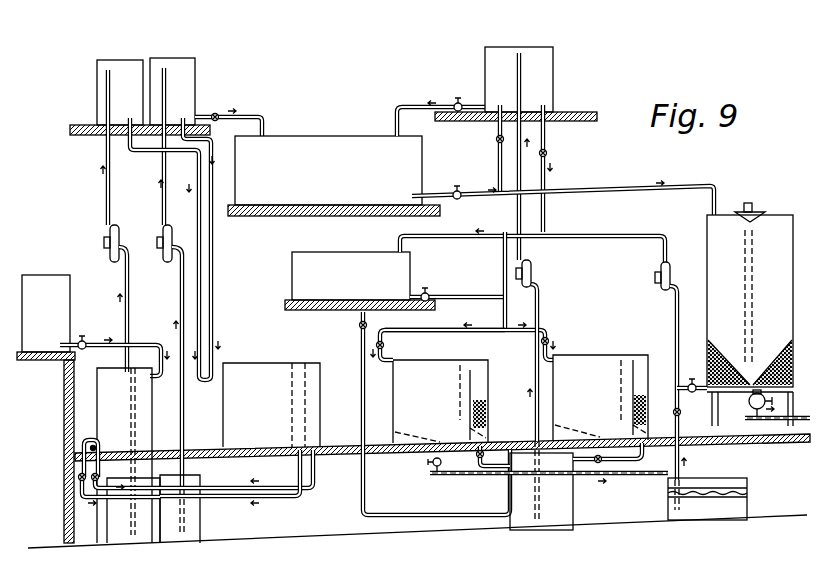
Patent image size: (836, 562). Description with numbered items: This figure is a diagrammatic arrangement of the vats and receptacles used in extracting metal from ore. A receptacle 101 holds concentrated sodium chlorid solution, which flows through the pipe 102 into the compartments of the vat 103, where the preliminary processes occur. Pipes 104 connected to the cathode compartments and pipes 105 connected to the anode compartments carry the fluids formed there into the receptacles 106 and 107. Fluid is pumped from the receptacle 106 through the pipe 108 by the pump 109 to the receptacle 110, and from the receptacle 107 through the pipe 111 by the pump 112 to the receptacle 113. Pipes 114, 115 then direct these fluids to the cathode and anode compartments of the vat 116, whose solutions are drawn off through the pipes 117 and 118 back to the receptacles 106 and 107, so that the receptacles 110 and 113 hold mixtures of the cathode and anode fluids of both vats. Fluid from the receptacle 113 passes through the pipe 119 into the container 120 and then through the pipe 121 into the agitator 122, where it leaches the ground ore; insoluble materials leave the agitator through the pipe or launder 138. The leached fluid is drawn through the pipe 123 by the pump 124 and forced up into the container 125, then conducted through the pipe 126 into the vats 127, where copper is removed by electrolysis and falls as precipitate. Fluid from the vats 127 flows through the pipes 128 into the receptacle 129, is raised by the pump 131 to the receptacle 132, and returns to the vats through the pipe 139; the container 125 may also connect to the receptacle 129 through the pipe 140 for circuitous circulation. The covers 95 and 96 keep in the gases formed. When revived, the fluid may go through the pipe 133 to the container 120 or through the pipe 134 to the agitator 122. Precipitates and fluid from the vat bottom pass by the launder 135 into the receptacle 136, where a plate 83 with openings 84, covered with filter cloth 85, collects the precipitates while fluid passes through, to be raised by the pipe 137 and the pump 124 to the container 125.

The plate 83 is at (742, 494).
The openings 84 is at (720, 498).
The filter cloth 85 is at (742, 488).
The cover 95 is at (535, 47).
The cover 96 is at (528, 450).
The receptacle 101 is at (52, 283).
The pipe 102 is at (85, 344).
The vat 103 is at (143, 399).
The pipes 104 is at (80, 487).
The pipes 105 is at (80, 498).
The receptacle 106 is at (140, 479).
The receptacle 107 is at (200, 478).
The pipe 108 is at (128, 292).
The pump 109 is at (109, 237).
The receptacle 110 is at (99, 66).
The pipe 111 is at (180, 302).
The pump 112 is at (162, 237).
The receptacle 113 is at (187, 68).
The pipe 114 is at (203, 275).
The pipe 115 is at (214, 293).
The vat 116 is at (266, 358).
The pipe 117 is at (290, 496).
The pipe 118 is at (316, 475).
The pipe 119 is at (258, 114).
The container 120 is at (357, 128).
The pipe 121 is at (481, 186).
The agitator 122 is at (796, 213).
The pipe 123 is at (675, 306).
The pump 124 is at (670, 270).
The container 125 is at (347, 247).
The pipe 126 is at (457, 286).
The vats 127 is at (398, 362).
The pipes 128 is at (495, 478).
The receptacle 129 is at (550, 522).
The pump 131 is at (534, 265).
The receptacle 132 is at (548, 59).
The pipe 133 is at (410, 105).
The pipe 134 is at (548, 148).
The launder 135 is at (438, 470).
The receptacle 136 is at (688, 521).
The pipe 137 is at (682, 445).
The pipe or launder 138 is at (775, 424).
The pipe 139 is at (505, 253).
The pipe 140 is at (361, 343).